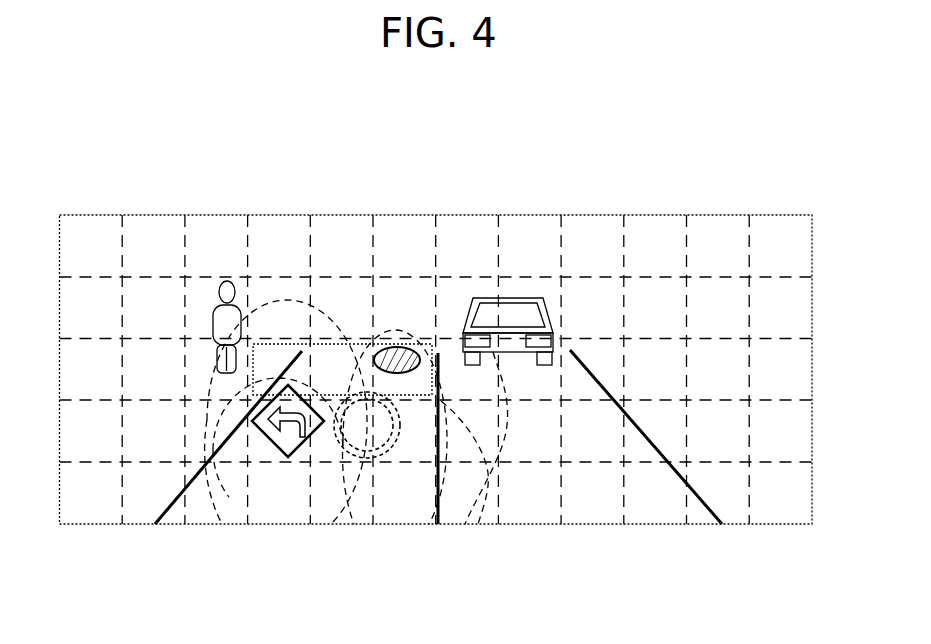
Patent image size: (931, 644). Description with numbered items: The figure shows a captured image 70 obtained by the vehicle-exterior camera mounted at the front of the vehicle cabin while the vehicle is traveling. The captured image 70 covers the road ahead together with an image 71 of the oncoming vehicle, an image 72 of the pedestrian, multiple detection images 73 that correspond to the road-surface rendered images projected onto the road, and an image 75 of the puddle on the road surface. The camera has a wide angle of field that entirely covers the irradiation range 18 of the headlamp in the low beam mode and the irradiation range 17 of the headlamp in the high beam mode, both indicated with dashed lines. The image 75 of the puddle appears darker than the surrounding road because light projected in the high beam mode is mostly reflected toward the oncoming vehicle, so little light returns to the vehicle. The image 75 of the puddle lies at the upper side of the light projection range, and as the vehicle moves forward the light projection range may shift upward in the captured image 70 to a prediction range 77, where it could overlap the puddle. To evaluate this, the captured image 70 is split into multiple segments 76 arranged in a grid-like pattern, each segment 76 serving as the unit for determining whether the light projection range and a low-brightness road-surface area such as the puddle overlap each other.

The captured image 70 is at (575, 215).
The image of the oncoming vehicle 71 is at (492, 298).
The image of the pedestrian 72 is at (228, 281).
The detection images 73 is at (277, 460).
The image of the puddle 75 is at (397, 346).
The segments 76 is at (297, 344).
The prediction range 77 is at (412, 398).
The irradiation range of the headlamp in the high beam mode 17 is at (513, 400).
The irradiation range of the headlamp in the low beam mode 18 is at (483, 475).